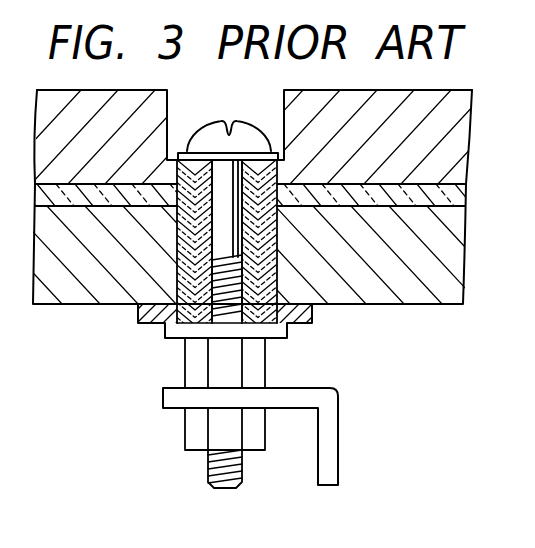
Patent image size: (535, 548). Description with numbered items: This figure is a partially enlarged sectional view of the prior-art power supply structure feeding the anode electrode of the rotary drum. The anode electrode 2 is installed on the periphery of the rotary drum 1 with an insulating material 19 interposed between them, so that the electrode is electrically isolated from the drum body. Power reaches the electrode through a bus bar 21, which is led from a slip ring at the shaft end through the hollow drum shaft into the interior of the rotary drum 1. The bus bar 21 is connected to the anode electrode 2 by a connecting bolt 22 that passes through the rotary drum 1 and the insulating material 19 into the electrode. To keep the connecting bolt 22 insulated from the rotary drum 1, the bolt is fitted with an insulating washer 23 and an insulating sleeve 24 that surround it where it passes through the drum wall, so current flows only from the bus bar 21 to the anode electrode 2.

The rotary drum 1 is at (453, 259).
The anode electrode 2 is at (455, 116).
The insulating material 19 is at (450, 199).
The bus bar 21 is at (328, 453).
The connecting bolt 22 is at (208, 467).
The insulating washer 23 is at (157, 323).
The sleeve 24 is at (183, 270).